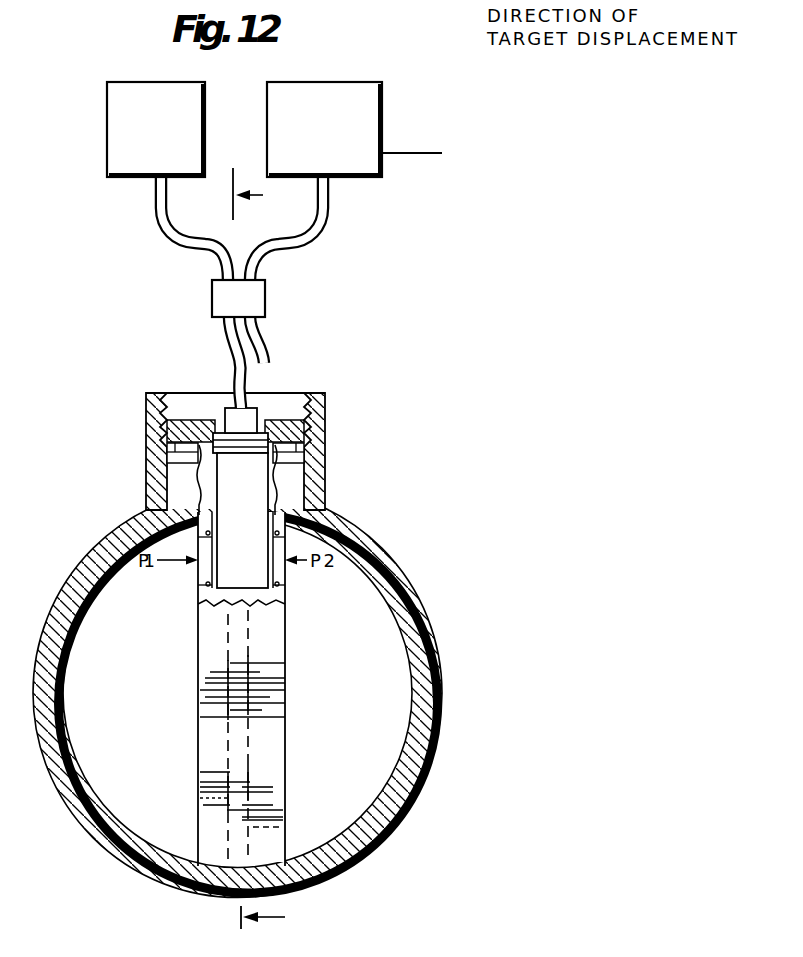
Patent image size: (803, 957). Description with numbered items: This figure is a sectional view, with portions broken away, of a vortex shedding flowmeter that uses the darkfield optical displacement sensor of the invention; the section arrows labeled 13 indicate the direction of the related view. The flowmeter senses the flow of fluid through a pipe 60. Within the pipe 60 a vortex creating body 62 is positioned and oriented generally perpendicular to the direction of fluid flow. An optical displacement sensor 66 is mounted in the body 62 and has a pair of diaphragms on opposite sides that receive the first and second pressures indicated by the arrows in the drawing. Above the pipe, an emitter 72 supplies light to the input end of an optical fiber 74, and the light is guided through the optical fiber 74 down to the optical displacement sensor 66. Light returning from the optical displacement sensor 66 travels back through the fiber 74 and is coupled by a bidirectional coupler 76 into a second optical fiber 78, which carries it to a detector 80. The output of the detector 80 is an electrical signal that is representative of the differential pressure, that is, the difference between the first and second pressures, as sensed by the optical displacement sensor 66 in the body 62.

The pipe 60 is at (410, 589).
The vortex creating body 62 is at (285, 648).
The optical displacement sensor 66 is at (250, 505).
The emitter 72 is at (107, 116).
The optical fiber 74 is at (152, 212).
The bidirectional coupler 76 is at (212, 297).
The optical fiber 78 is at (316, 270).
The detector 80 is at (382, 104).
The section line 13- 13 is at (274, 549).